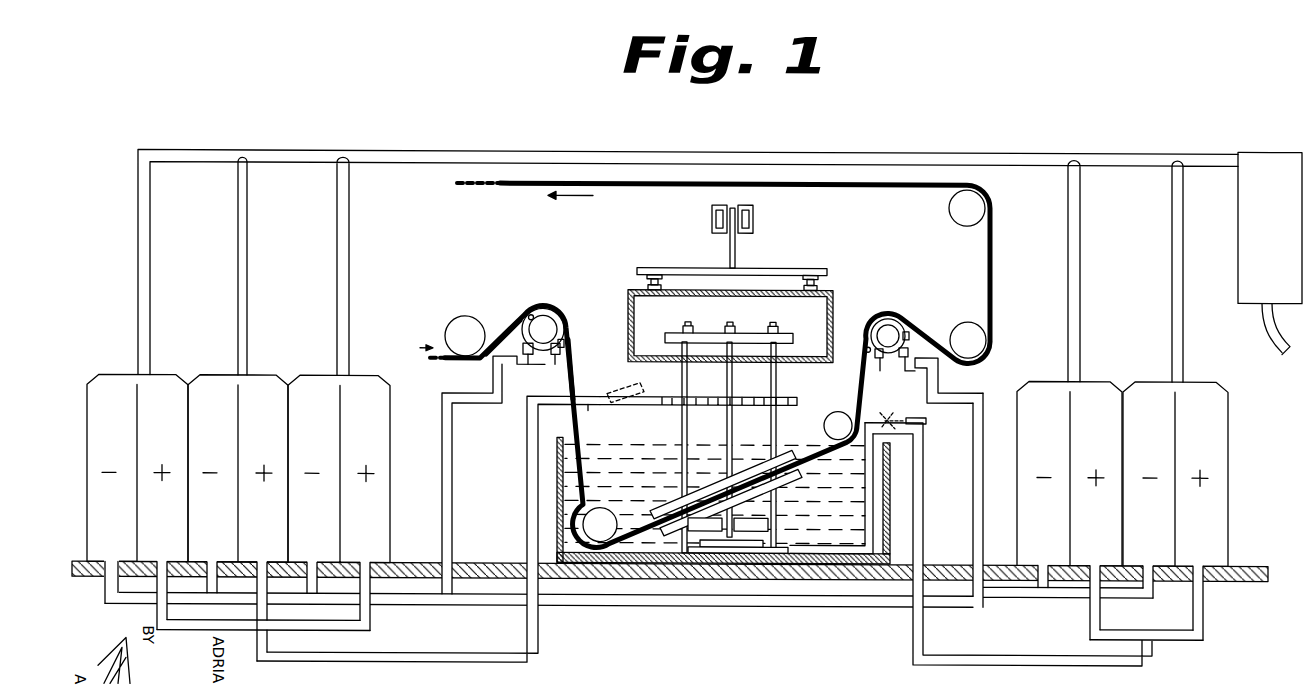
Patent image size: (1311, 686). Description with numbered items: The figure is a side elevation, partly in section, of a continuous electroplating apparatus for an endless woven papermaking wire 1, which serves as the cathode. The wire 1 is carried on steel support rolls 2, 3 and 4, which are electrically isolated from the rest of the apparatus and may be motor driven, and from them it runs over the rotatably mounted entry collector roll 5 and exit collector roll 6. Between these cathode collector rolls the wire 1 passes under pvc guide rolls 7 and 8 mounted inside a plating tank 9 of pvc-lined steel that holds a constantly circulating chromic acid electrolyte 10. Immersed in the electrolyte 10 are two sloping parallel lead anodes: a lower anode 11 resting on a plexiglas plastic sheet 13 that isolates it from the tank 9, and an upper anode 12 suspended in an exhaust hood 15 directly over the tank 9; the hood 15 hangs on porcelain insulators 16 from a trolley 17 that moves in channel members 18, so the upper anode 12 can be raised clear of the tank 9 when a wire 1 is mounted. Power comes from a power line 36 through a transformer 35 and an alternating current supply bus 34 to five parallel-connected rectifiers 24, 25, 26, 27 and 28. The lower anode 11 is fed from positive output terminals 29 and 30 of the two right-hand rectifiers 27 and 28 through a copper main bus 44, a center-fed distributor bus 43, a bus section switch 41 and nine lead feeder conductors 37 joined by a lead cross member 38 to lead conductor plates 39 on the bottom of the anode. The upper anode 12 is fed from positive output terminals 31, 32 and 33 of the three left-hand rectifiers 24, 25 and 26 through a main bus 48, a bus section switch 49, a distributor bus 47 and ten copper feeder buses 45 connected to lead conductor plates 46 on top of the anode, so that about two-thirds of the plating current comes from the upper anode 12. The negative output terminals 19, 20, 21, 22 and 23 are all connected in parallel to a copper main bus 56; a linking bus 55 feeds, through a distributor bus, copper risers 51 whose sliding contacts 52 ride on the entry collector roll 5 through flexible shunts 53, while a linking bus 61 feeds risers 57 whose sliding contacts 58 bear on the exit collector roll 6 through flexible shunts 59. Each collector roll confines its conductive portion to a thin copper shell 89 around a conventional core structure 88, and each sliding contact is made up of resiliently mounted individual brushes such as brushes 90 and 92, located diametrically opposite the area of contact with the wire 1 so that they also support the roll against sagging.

The wire 1 is at (513, 188).
The support roll 2 is at (463, 330).
The support roll 3 is at (968, 321).
The support roll 4 is at (950, 222).
The entry collector roll 5 is at (569, 316).
The exit collector roll 6 is at (886, 318).
The guide roll 7 is at (592, 526).
The guide roll 8 is at (843, 411).
The plating tank 9 is at (566, 440).
The electrolyte 10 is at (664, 444).
The lower anode 11 is at (801, 474).
The upper anode 12 is at (750, 462).
The plastic sheet 13 is at (716, 562).
The exhaust hood 15 is at (833, 320).
The porcelain insulators 16 is at (647, 285).
The trolley 17 is at (745, 244).
The channel members 18 is at (710, 217).
The negative output terminal 19 is at (98, 542).
The negative output terminal 20 is at (199, 547).
The negative output terminal 21 is at (299, 547).
The negative output terminal 22 is at (1029, 548).
The negative output terminal 23 is at (1131, 548).
The rectifier 24 is at (162, 376).
The rectifier 25 is at (276, 376).
The rectifier 26 is at (360, 376).
The rectifier 27 is at (1094, 380).
The rectifier 28 is at (1200, 380).
The positive output terminal 29 is at (151, 532).
The positive output terminal 30 is at (253, 532).
The positive output terminal 31 is at (353, 532).
The positive output terminal 32 is at (1081, 538).
The positive output terminal 33 is at (1186, 538).
The alternating current supply bus 34 is at (405, 166).
The transformer 35 is at (1238, 236).
The power line 36 is at (1264, 315).
The feeder conductors 37 is at (830, 548).
The lead cross member 38 is at (764, 542).
The lead conductor plates 39 is at (728, 525).
The bus section switch 41 is at (894, 418).
The copper distributor bus 43 is at (927, 423).
The copper main bus 44 is at (924, 528).
The copper feeder buses 45 is at (665, 398).
The lead conductor plates 46 is at (688, 430).
The copper distributor bus 47 is at (589, 410).
The main bus 48 is at (527, 489).
The bus section switch 49 is at (625, 403).
The copper risers 51 is at (530, 358).
The sliding contacts 52 is at (556, 357).
The flexible shunts 53 is at (509, 342).
The copper linking bus 55 is at (484, 402).
The main bus 56 is at (612, 608).
The copper risers 57 is at (940, 372).
The sliding contacts 58 is at (898, 359).
The flexible shunts 59 is at (909, 348).
The linking bus 61 is at (973, 462).
The core structure 88 is at (567, 318).
The copper shell 89 is at (560, 330).
The brush 90 is at (534, 318).
The brush 92 is at (565, 345).